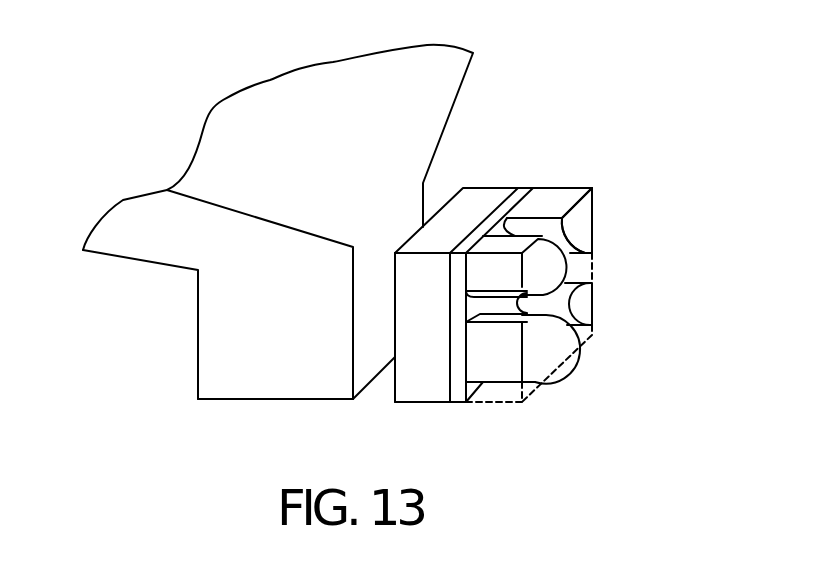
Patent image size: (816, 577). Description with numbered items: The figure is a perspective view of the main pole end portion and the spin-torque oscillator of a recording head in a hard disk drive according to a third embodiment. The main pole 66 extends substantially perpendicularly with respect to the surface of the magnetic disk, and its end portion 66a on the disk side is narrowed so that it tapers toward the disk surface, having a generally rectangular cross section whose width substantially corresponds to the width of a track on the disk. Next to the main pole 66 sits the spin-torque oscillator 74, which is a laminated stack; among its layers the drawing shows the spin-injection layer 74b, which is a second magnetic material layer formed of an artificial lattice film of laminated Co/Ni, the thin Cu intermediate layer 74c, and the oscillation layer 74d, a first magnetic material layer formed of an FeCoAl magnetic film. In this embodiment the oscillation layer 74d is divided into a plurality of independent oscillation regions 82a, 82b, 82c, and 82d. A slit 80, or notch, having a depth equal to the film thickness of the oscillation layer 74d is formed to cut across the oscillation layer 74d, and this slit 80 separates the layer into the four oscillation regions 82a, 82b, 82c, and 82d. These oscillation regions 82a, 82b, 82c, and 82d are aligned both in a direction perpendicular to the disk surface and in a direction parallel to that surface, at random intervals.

The main pole 66 is at (227, 118).
The end portion of the main pole 66a is at (254, 387).
The spin-torque oscillator 74 is at (503, 151).
The spin-injection layer 74b is at (410, 390).
The intermediate layer 74c is at (458, 388).
The oscillation layer 74d is at (596, 230).
The slit 80 is at (578, 268).
The oscillation region 82a is at (548, 356).
The oscillation region 82b is at (583, 305).
The oscillation region 82c is at (585, 205).
The oscillation region 82d is at (547, 265).